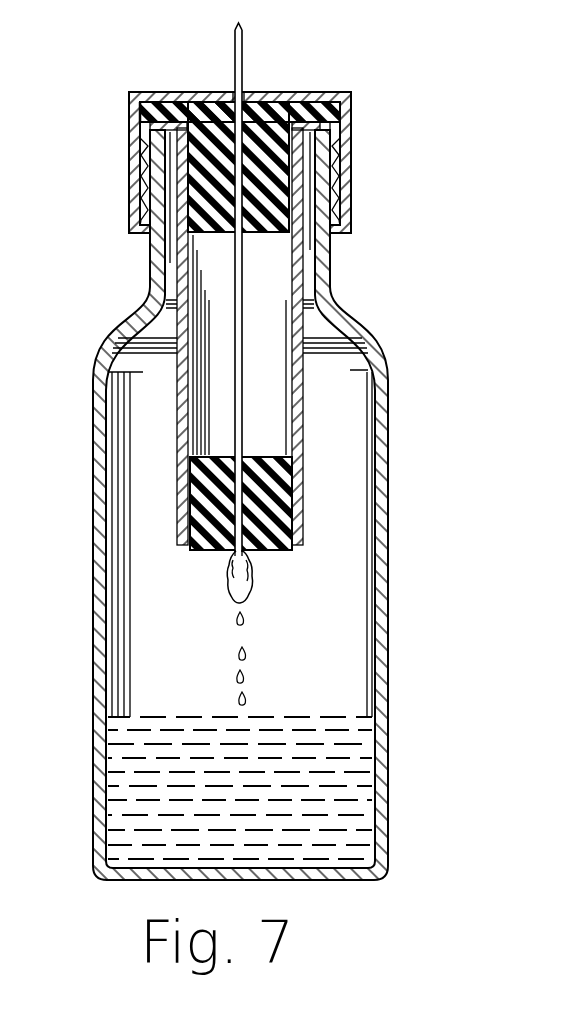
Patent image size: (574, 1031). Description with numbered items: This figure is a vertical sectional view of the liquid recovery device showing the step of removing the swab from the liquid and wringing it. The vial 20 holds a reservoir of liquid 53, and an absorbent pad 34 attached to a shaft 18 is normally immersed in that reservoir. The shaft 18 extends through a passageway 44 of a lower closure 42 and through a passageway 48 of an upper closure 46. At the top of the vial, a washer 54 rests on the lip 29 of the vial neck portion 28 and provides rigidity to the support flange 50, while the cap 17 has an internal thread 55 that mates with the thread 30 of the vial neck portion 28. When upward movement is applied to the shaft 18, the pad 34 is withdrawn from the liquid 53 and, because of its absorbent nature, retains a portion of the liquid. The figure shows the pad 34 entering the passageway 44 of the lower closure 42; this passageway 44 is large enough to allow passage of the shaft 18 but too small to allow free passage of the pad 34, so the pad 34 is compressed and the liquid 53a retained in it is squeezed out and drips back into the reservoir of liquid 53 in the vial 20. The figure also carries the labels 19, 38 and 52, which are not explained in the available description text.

The cap 17 is at (350, 133).
The shaft 18 is at (243, 47).
The aperture in cap 19 is at (243, 92).
The vial 20 is at (447, 472).
The vial neck portion 28 is at (150, 248).
The lip 29 is at (318, 107).
The thread 30 is at (142, 188).
The absorbent pad 34 is at (228, 582).
The tube 38 is at (305, 407).
The lower closure 42 is at (278, 510).
The passageway 44 is at (247, 553).
The closure 46 is at (272, 184).
The passageway 48 is at (245, 237).
The support flange 50 is at (153, 103).
The gasket 52 is at (148, 130).
The liquid 53 is at (115, 772).
The liquid 53a is at (237, 676).
The washer 54 is at (142, 109).
The internal thread 55 is at (142, 212).